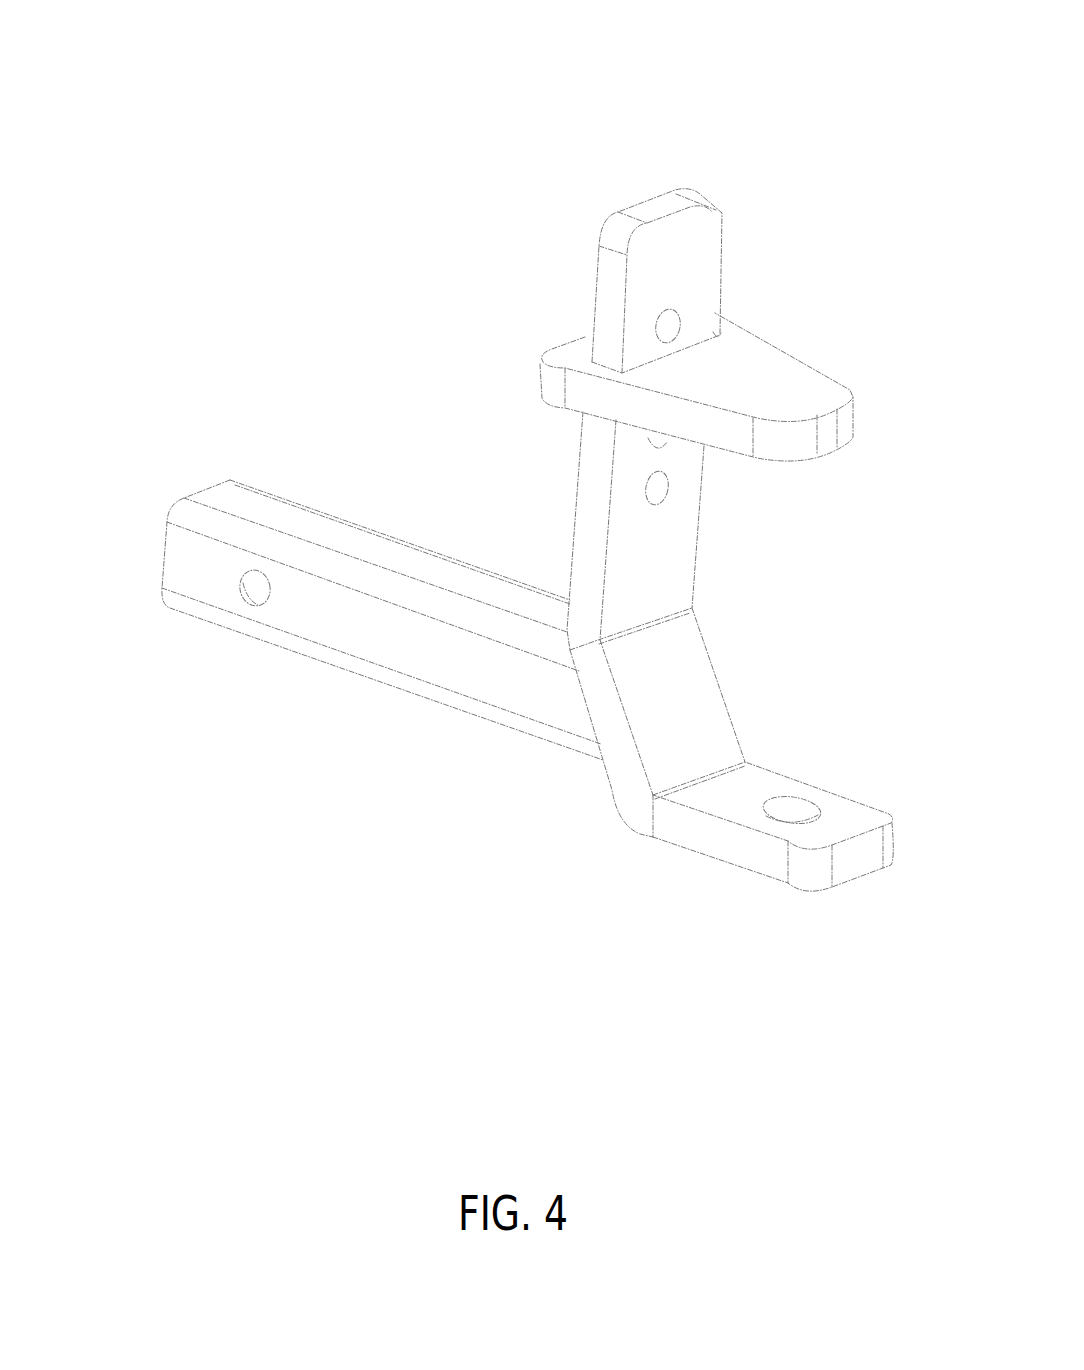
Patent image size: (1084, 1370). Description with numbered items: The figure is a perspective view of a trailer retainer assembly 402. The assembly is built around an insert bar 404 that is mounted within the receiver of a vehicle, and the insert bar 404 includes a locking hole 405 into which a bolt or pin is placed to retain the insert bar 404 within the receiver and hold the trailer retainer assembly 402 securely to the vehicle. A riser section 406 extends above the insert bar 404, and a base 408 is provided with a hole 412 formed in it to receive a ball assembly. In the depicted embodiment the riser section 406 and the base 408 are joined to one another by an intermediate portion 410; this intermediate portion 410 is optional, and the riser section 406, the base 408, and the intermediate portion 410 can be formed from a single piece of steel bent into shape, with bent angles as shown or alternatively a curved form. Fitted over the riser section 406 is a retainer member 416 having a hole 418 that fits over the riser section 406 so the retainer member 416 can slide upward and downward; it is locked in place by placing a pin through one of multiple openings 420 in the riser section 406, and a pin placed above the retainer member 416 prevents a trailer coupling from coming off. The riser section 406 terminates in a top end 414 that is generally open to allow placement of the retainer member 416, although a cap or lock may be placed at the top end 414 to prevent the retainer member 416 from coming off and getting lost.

The trailer retainer assembly 402 is at (501, 495).
The insert bar 404 is at (341, 623).
The locking hole 405 is at (255, 590).
The riser section 406 is at (596, 424).
The base 408 is at (695, 876).
The intermediate portion 410 is at (683, 708).
The hole 412 is at (785, 808).
The top end 414 is at (648, 212).
The retainer member 416 is at (730, 384).
The hole 418 is at (652, 363).
The openings 420 is at (670, 333).